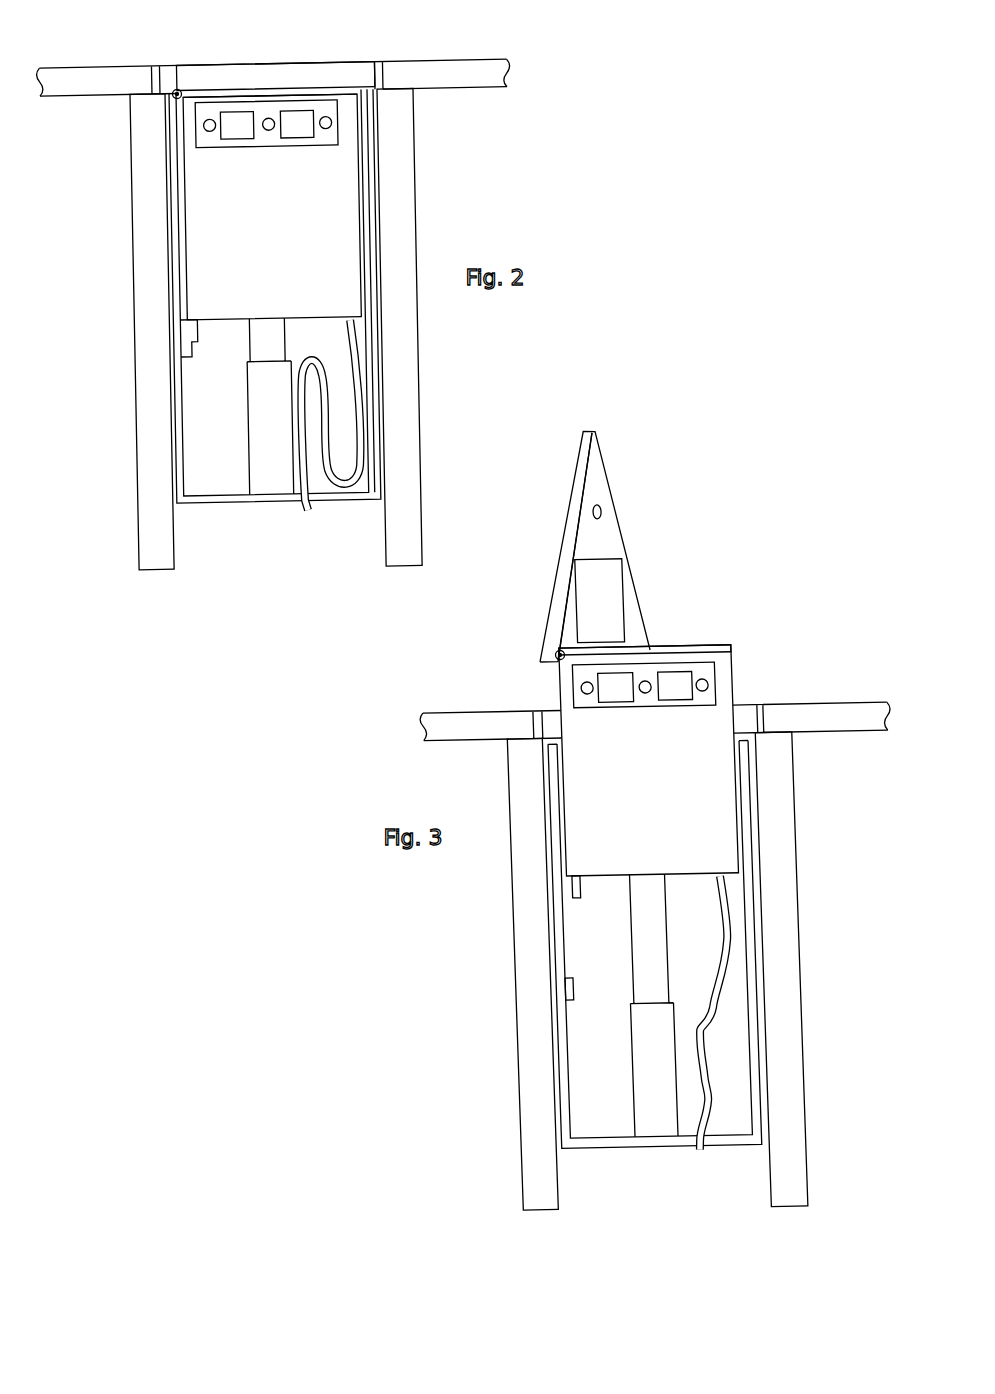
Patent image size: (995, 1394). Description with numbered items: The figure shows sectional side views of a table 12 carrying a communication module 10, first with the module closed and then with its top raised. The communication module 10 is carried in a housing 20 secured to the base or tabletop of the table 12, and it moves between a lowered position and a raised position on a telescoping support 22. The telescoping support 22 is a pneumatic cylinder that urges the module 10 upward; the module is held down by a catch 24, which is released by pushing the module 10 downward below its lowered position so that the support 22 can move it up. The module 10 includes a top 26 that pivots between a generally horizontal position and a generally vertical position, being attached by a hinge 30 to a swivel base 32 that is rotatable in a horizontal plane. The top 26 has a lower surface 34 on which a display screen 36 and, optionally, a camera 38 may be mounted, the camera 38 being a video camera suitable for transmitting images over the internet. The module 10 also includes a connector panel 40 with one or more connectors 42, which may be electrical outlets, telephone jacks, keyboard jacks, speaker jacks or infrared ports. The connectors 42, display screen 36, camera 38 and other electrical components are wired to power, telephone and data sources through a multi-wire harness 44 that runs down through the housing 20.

In FIG. 2, the communication module 10 is at (272, 222).
In FIG. 3, the communication module 10 is at (654, 805).
In FIG. 2, the table 12 is at (468, 155).
In FIG. 3, the table 12 is at (817, 817).
In FIG. 2, the housing 20 is at (202, 501).
In FIG. 3, the housing 20 is at (583, 1146).
In FIG. 2, the telescoping support 22 is at (266, 427).
In FIG. 3, the telescoping support 22 is at (631, 1064).
In FIG. 2, the catch 24 is at (187, 350).
In FIG. 3, the catch 24 is at (562, 990).
In FIG. 2, the top 26 is at (295, 77).
In FIG. 3, the top 26 is at (565, 557).
In FIG. 2, the hinge 30 is at (175, 90).
In FIG. 3, the hinge 30 is at (557, 660).
In FIG. 2, the swivel base 32 is at (243, 86).
In FIG. 3, the swivel base 32 is at (693, 650).
In FIG. 3, the lower surface 34 is at (616, 541).
In FIG. 3, the display screen 36 is at (612, 601).
In FIG. 3, the camera 38 is at (605, 506).
In FIG. 3, the connector panel 40 is at (646, 695).
In FIG. 3, the connectors 42 is at (679, 689).
In FIG. 2, the multi-wire harness 44 is at (300, 472).
In FIG. 3, the multi-wire harness 44 is at (691, 1116).